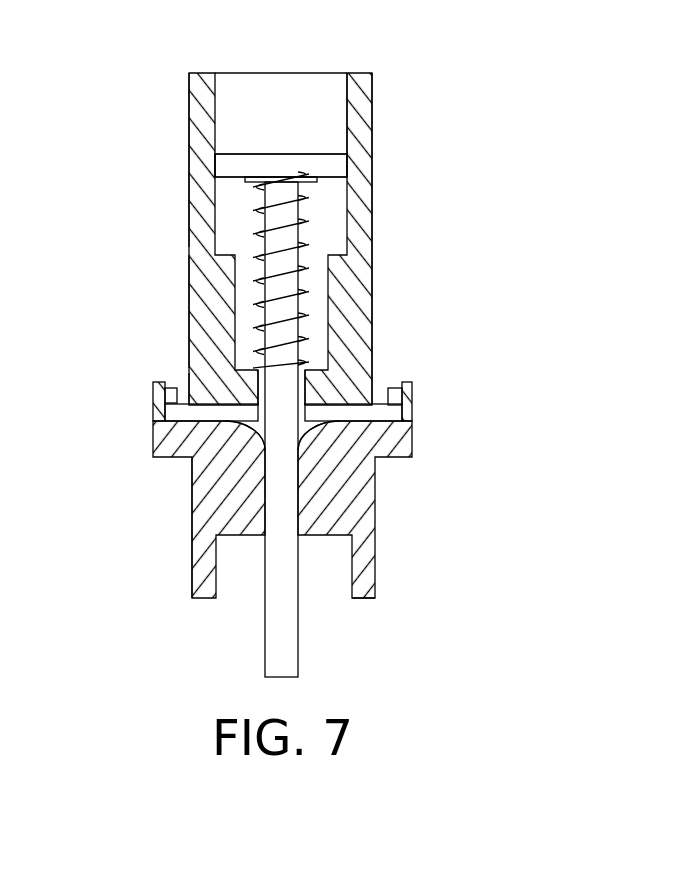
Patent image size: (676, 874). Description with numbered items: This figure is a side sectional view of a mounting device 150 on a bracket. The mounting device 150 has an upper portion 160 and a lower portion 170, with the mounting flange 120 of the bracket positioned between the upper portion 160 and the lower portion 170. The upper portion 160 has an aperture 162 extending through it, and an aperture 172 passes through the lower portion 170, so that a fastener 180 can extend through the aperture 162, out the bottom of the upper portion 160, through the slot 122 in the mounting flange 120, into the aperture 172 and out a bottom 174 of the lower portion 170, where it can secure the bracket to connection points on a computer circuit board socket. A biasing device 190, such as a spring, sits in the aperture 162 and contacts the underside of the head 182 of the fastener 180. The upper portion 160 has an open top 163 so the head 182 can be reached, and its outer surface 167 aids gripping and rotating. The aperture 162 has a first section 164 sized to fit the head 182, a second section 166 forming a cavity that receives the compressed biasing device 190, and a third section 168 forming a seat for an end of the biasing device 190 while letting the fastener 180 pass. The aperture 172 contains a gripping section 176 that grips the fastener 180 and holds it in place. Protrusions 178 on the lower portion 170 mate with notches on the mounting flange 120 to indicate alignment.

The mounting device 150 is at (482, 103).
The upper portion 160 is at (372, 220).
The aperture 162 is at (327, 207).
The open top 163 is at (347, 86).
The first section 164 is at (132, 75).
The second section 166 is at (132, 255).
The outer surface 167 is at (372, 107).
The third section 168 is at (132, 373).
The lower portion 170 is at (375, 497).
The aperture 172 is at (303, 473).
The bottom 174 is at (367, 598).
The gripping section 176 is at (132, 440).
The protrusions 178 is at (163, 402).
The fastener 180 is at (299, 635).
The head 182 is at (252, 153).
The biasing device 190 is at (300, 243).
The mounting flange 120 is at (378, 413).
The slot 122 is at (300, 372).